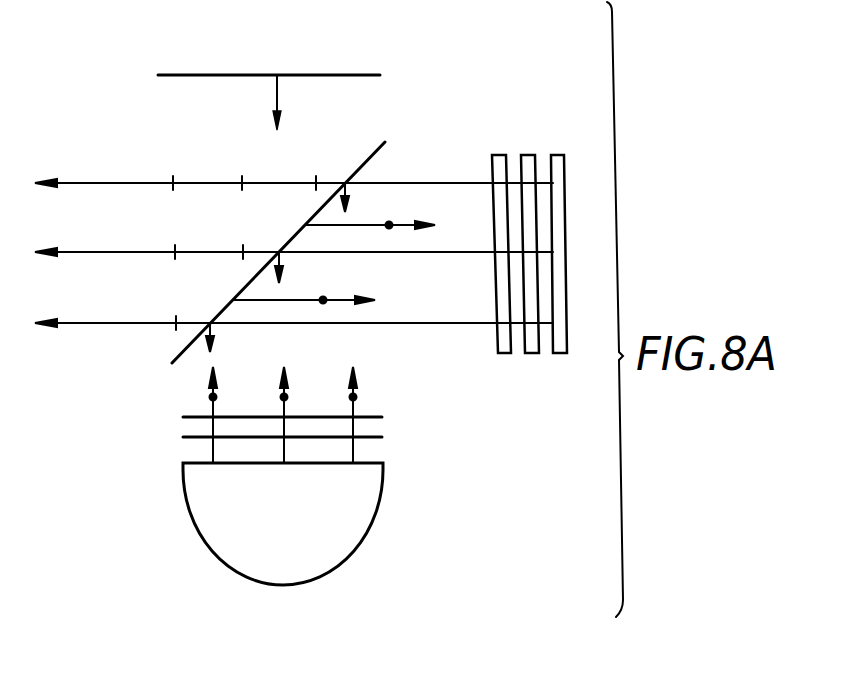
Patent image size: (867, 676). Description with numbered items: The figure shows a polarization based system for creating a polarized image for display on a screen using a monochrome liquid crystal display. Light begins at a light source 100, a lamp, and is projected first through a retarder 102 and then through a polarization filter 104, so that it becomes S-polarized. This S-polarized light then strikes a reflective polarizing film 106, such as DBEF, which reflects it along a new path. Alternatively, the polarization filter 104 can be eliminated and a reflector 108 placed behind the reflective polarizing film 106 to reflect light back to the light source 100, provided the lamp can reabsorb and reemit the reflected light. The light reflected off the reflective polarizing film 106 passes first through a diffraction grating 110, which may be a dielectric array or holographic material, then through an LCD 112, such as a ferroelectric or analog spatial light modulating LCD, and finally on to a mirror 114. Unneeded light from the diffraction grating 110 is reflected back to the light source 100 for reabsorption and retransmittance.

The light source 100 is at (205, 532).
The retarder 102 is at (382, 440).
The polarization filter 104 is at (382, 415).
The reflective polarizing film 106 is at (368, 147).
The reflector 108 is at (357, 72).
The diffraction grating 110 is at (500, 152).
The LCD 112 is at (528, 152).
The mirror 114 is at (557, 152).